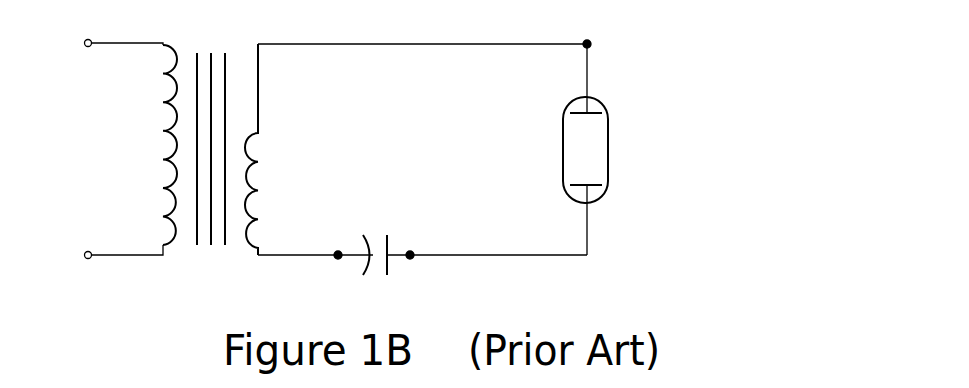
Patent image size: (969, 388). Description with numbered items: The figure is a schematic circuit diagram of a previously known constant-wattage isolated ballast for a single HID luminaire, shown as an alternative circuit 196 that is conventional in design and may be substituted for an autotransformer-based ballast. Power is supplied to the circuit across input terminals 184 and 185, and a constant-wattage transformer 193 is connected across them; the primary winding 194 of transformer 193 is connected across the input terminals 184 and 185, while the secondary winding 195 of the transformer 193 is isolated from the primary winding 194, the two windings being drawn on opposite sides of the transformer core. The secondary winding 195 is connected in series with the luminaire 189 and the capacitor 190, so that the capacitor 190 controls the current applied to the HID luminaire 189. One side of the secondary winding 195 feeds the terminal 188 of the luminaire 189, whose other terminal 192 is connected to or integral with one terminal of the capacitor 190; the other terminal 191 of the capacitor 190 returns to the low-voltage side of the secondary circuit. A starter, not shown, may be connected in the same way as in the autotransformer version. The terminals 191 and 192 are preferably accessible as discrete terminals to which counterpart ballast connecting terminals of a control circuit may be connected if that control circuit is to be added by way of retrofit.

The input terminal 184 is at (115, 63).
The input terminal 185 is at (115, 240).
The primary winding 194 is at (164, 160).
The constant-wattage transformer 193 is at (213, 285).
The secondary winding 195 is at (257, 163).
The alternative circuit 196 is at (677, 98).
The terminal 191 is at (338, 251).
The capacitor 190 is at (377, 234).
The terminal 192 is at (412, 253).
The terminal 188 is at (588, 40).
The HID luminaire 189 is at (563, 132).